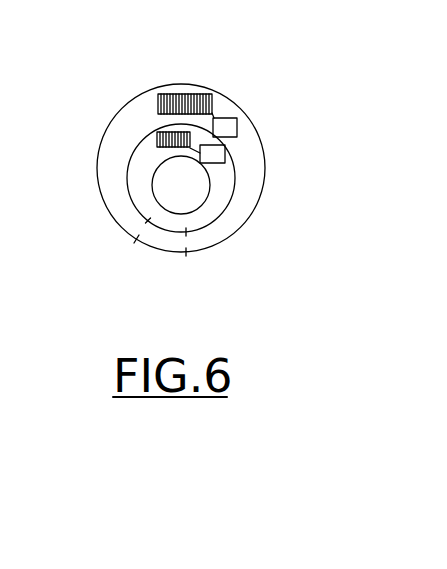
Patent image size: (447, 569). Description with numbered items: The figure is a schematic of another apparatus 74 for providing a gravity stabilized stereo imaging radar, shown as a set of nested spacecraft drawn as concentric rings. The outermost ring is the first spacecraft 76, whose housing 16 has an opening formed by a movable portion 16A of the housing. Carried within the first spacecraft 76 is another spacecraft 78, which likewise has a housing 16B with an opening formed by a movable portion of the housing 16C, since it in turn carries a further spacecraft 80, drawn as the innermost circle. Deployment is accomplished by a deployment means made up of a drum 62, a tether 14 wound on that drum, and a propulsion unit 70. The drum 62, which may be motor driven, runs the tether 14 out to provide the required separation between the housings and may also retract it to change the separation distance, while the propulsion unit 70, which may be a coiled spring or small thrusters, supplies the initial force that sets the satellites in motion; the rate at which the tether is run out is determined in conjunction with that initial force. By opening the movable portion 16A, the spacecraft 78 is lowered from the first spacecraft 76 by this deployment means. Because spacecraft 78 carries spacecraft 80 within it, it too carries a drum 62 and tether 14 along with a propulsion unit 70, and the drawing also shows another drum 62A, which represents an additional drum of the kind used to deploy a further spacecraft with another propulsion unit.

The apparatus for providing a gravity stabilized stereo imaging radar 74 is at (263, 81).
The tether 14 is at (190, 150).
The drum 62A is at (157, 95).
The housing 16 is at (155, 129).
The drum 62 is at (157, 137).
The propulsion unit 70 is at (226, 145).
The first spacecraft 76 is at (269, 149).
The spacecraft 78 is at (223, 222).
The spacecraft 80 is at (147, 192).
The movable portion 16A is at (163, 252).
The housing 16B is at (247, 206).
The movable portion of the housing 16C is at (156, 231).